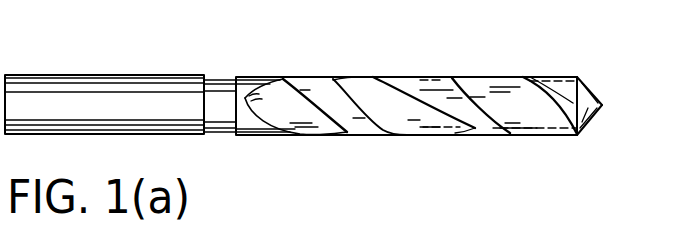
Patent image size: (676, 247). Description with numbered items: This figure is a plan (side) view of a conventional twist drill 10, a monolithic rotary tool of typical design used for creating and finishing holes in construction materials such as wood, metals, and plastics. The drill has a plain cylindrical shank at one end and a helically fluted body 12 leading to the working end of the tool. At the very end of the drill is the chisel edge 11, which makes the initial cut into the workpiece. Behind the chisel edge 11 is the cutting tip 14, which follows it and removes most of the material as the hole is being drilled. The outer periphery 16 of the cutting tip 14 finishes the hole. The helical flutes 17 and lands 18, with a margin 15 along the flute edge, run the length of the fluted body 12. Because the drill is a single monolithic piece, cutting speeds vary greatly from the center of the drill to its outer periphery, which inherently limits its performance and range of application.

The twist drill 10 is at (233, 63).
The chisel edge 11 is at (602, 105).
The body 12 is at (371, 60).
The cutting tip 14 is at (577, 135).
The margin 15 is at (468, 127).
The outer periphery 16 is at (577, 77).
The flute 17 is at (282, 116).
The land 18 is at (399, 107).